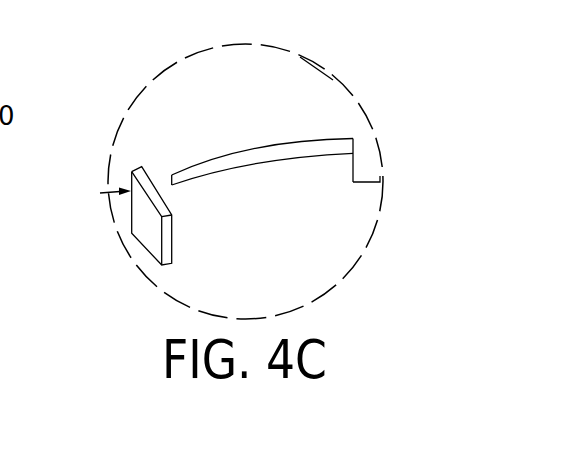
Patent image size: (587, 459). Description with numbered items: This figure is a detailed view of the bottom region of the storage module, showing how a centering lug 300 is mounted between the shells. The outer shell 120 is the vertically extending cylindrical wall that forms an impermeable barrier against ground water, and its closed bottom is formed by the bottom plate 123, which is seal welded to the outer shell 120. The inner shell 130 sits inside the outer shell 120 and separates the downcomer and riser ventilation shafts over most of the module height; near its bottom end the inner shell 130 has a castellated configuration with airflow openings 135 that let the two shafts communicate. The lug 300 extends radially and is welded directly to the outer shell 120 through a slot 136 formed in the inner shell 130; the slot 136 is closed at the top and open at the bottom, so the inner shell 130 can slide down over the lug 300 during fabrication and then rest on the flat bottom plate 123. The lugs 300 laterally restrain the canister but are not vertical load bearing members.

The inner shell 130 is at (303, 100).
The outer shell 120 is at (330, 147).
The airflow openings 135 is at (337, 168).
The bottom plate 123 is at (295, 236).
The slots 136 is at (100, 193).
The centering lugs 300 is at (147, 235).